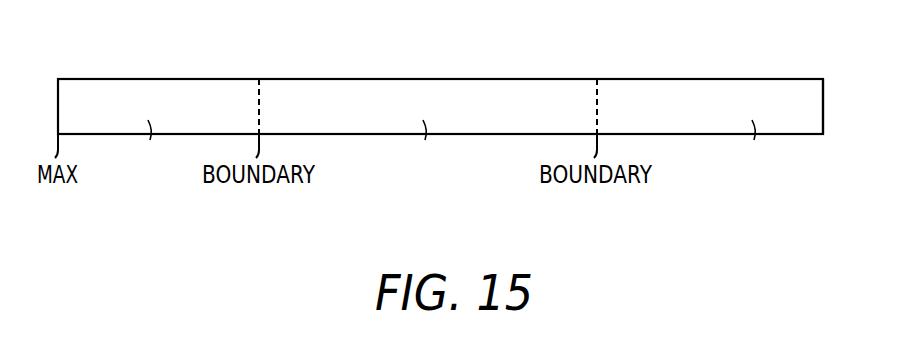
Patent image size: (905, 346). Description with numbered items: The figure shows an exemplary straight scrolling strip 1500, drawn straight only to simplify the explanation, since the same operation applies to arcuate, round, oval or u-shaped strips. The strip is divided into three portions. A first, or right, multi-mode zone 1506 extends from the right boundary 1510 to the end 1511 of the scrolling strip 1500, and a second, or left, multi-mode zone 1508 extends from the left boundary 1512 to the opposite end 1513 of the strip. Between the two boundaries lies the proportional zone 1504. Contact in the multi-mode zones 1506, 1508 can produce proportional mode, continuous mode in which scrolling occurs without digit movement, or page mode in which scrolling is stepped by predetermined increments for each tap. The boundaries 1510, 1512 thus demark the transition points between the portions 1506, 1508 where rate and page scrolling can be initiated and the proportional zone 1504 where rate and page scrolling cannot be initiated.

The scrolling strip 1500 is at (440, 67).
The proportional zone 1504 is at (423, 147).
The right multi-mode zone 1506 is at (752, 147).
The left multi-mode zone 1508 is at (151, 147).
The right boundary 1510 is at (599, 86).
The end of the scrolling strip 1511 is at (824, 86).
The left boundary 1512 is at (277, 69).
The end of the scrolling strip 1513 is at (59, 86).